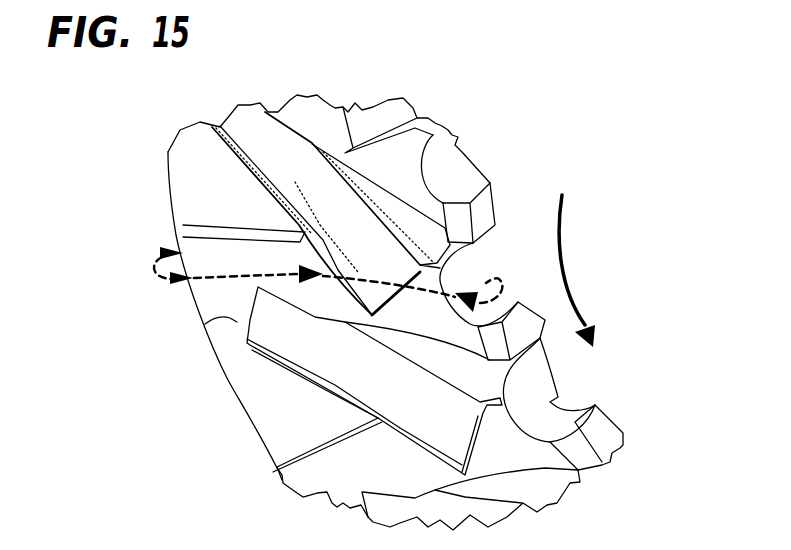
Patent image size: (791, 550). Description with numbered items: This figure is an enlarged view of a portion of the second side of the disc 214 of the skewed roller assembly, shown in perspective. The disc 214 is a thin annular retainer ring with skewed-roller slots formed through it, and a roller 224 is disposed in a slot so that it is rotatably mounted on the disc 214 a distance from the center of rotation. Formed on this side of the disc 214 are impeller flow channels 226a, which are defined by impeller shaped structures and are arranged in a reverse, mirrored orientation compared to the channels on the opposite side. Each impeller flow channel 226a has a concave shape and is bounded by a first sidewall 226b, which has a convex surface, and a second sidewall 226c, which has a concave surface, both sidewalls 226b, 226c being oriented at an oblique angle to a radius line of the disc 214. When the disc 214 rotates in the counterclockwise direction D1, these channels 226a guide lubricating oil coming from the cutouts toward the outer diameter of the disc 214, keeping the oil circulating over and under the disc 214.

The disc 214 is at (172, 188).
The roller 224 is at (342, 358).
The impeller flow channel 226a is at (200, 308).
The first sidewall 226b is at (228, 319).
The second sidewall 226c is at (247, 239).
The counterclockwise direction D1 is at (568, 279).